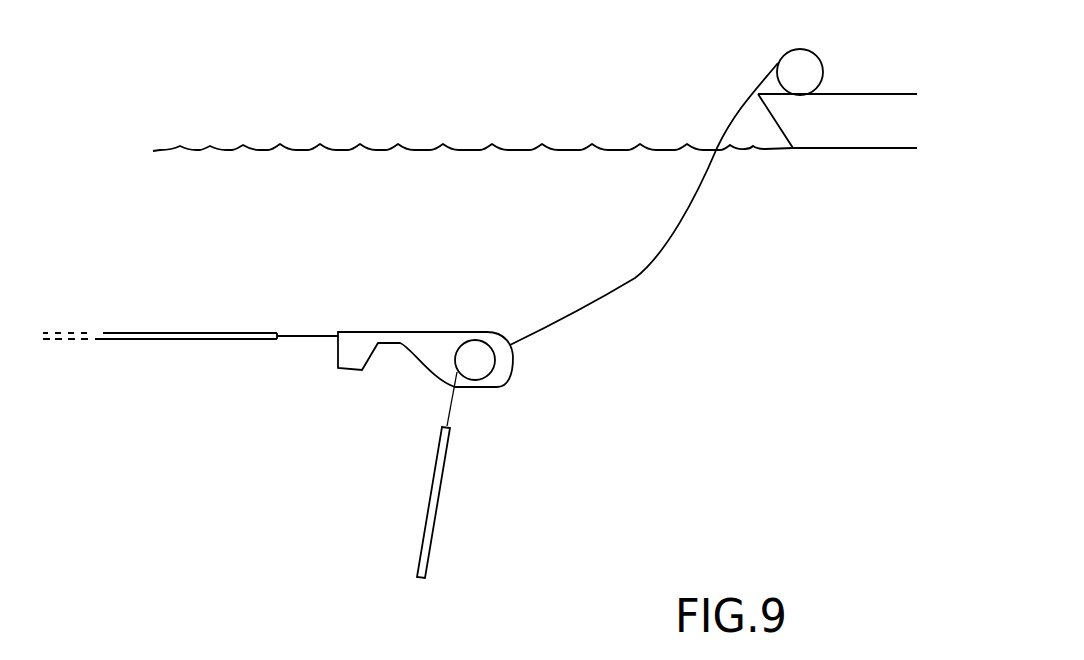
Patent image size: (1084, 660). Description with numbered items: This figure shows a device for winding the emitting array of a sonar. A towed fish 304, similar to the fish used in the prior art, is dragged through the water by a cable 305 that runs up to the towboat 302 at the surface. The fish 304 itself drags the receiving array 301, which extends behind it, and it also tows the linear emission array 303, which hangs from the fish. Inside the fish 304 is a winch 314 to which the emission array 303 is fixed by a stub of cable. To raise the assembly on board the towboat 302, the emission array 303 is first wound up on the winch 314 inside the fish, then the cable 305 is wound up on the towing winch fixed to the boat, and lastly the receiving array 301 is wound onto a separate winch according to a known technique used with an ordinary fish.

The receiving array 301 is at (208, 344).
The towboat 302 is at (857, 98).
The linear emission array 303 is at (440, 493).
The towed fish 304 is at (448, 330).
The cable 305 is at (635, 280).
The winch 314 is at (478, 362).